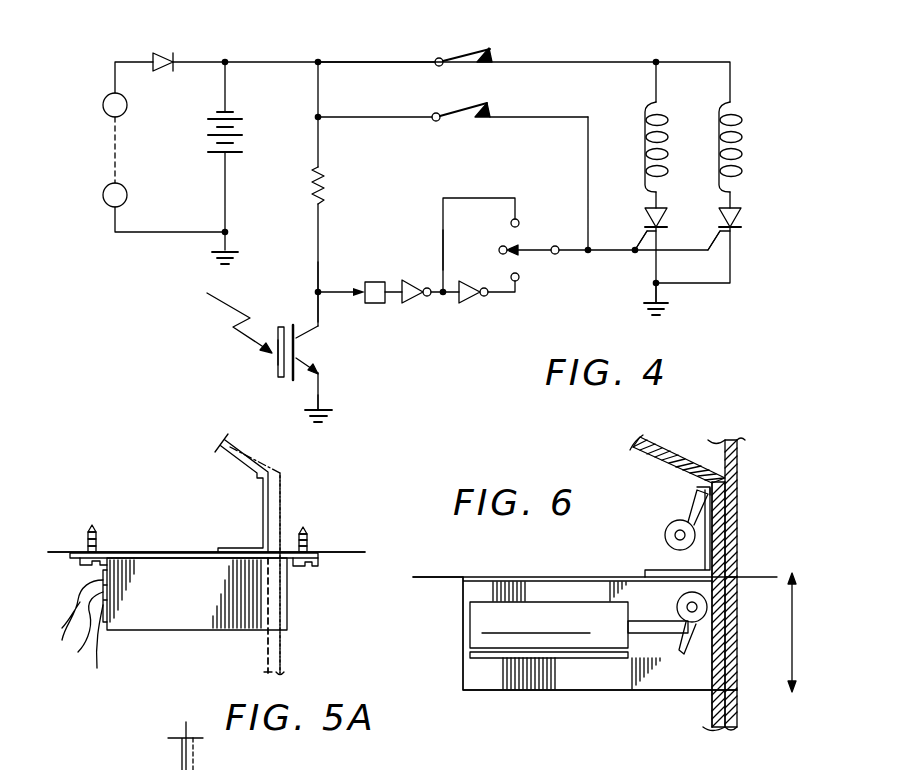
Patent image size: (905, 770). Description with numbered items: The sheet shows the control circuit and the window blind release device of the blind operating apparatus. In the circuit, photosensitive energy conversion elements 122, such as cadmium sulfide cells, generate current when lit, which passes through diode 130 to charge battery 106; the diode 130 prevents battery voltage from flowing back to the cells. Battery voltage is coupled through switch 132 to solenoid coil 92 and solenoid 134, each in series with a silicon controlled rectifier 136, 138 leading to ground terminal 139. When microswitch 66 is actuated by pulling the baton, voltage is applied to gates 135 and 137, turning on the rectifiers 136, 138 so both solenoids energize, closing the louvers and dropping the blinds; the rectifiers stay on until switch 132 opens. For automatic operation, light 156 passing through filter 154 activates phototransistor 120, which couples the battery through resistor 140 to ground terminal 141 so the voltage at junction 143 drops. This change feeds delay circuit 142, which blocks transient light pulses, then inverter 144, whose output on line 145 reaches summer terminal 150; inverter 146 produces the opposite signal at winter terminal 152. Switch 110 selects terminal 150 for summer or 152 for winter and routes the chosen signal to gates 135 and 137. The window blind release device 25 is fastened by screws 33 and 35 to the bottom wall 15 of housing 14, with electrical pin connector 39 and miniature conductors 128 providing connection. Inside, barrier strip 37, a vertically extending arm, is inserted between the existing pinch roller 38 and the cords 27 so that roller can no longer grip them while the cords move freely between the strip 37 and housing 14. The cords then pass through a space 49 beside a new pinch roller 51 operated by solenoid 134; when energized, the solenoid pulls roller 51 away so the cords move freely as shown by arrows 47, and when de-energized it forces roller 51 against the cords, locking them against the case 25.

In FIG. 4, the diode 130 is at (163, 52).
In FIG. 4, the photosensitive energy conversion element 122 is at (102, 104).
In FIG. 4, the battery 106 is at (252, 125).
In FIG. 4, the switch 132 is at (472, 53).
In FIG. 4, the microswitch 66 is at (467, 100).
In FIG. 4, the resistor 140 is at (323, 183).
In FIG. 4, the phototransistor 120 is at (307, 328).
In FIG. 4, the junction 143 is at (317, 292).
In FIG. 4, the light 156 is at (218, 303).
In FIG. 4, the filter 154 is at (278, 363).
In FIG. 4, the ground terminal 141 is at (330, 410).
In FIG. 4, the delay circuit 142 is at (372, 285).
In FIG. 4, the inverter 144 is at (417, 303).
In FIG. 4, the inverter 146 is at (463, 302).
In FIG. 4, the line 145 is at (440, 250).
In FIG. 4, the summer terminal 150 is at (511, 223).
In FIG. 4, the winter terminal 152 is at (520, 275).
In FIG. 4, the switch 110 is at (533, 246).
In FIG. 4, the solenoid coil 92 is at (642, 128).
In FIG. 4, the solenoid 134 is at (740, 122).
In FIG. 6, the solenoid 134 is at (553, 600).
In FIG. 4, the silicon controlled rectifier 136 is at (668, 212).
In FIG. 4, the silicon controlled rectifier 138 is at (742, 220).
In FIG. 4, the gate 135 is at (645, 240).
In FIG. 4, the gate 137 is at (712, 245).
In FIG. 4, the ground terminal 139 is at (652, 300).
In FIG. 5A, the window blind release device 25 is at (200, 600).
In FIG. 6, the window blind release device 25 is at (735, 667).
In FIG. 5A, the electrical pin connector 39 is at (100, 577).
In FIG. 5A, the miniature conductors 128 is at (90, 639).
In FIG. 5A, the screw 33 is at (100, 537).
In FIG. 5A, the screw 35 is at (308, 533).
In FIG. 5A, the barrier strip 37 is at (265, 518).
In FIG. 6, the barrier strip 37 is at (705, 560).
In FIG. 5A, the bottom wall 15 is at (337, 555).
In FIG. 6, the bottom wall 15 is at (433, 578).
In FIG. 5A, the blind height control cord 27 is at (270, 653).
In FIG. 6, the blind height control cord 27 is at (712, 707).
In FIG. 6, the housing 14 is at (738, 483).
In FIG. 6, the existing pinch roller 38 is at (698, 500).
In FIG. 6, the pinch roller 51 is at (677, 602).
In FIG. 6, the space 49 is at (727, 577).
In FIG. 6, the arrows 47 is at (792, 620).